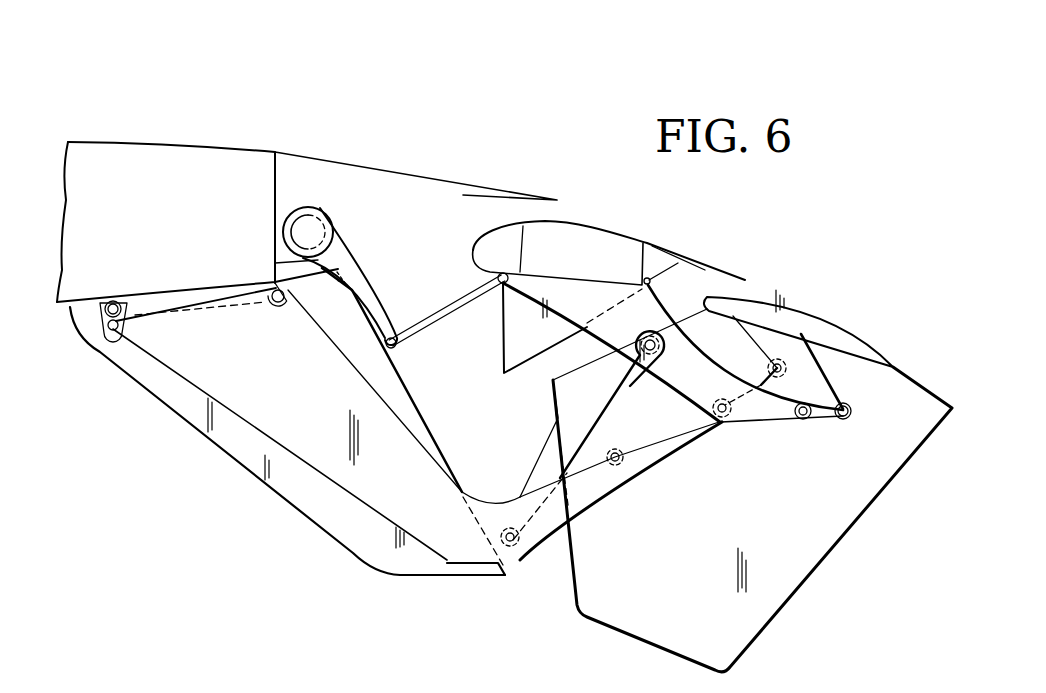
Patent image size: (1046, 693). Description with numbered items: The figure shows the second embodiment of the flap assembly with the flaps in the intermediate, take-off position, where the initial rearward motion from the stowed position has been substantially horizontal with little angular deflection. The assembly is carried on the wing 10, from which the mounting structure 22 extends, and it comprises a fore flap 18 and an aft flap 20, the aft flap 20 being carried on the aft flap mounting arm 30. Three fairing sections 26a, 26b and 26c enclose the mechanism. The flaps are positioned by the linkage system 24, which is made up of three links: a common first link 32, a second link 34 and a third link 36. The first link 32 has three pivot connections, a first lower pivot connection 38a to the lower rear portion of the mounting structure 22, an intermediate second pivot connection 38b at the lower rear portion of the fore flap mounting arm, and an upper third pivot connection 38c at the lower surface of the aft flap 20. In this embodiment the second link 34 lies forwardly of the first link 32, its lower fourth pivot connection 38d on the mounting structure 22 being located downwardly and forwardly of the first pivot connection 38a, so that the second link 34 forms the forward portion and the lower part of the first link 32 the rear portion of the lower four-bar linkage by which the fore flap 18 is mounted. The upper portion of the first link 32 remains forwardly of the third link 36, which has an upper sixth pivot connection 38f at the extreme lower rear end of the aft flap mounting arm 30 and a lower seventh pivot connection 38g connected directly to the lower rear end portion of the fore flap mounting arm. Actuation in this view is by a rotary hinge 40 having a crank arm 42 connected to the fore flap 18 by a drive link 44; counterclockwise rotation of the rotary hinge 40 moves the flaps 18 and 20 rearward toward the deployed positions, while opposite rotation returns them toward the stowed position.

The wing 10 is at (230, 158).
The fore flap 18 is at (598, 240).
The aft flap 20 is at (768, 297).
The mounting structure 22 is at (307, 447).
The linkage system 24 is at (697, 455).
The fairing section 26a is at (378, 560).
The fairing section 26b is at (833, 547).
The fairing section 26c is at (503, 357).
The aft flap mounting arm 30 is at (820, 387).
The common first link 32 is at (657, 440).
The second link 34 is at (538, 460).
The third link 36 is at (820, 421).
The first pivot connection 38a is at (612, 466).
The second pivot connection 38b is at (722, 414).
The third pivot connection 38c is at (782, 368).
The fourth pivot connection 38d is at (512, 547).
The sixth pivot connection 38f is at (853, 412).
The seventh pivot connection 38g is at (805, 420).
The rotary hinge 40 is at (325, 222).
The crank arm 42 is at (370, 282).
The drive link 44 is at (434, 328).